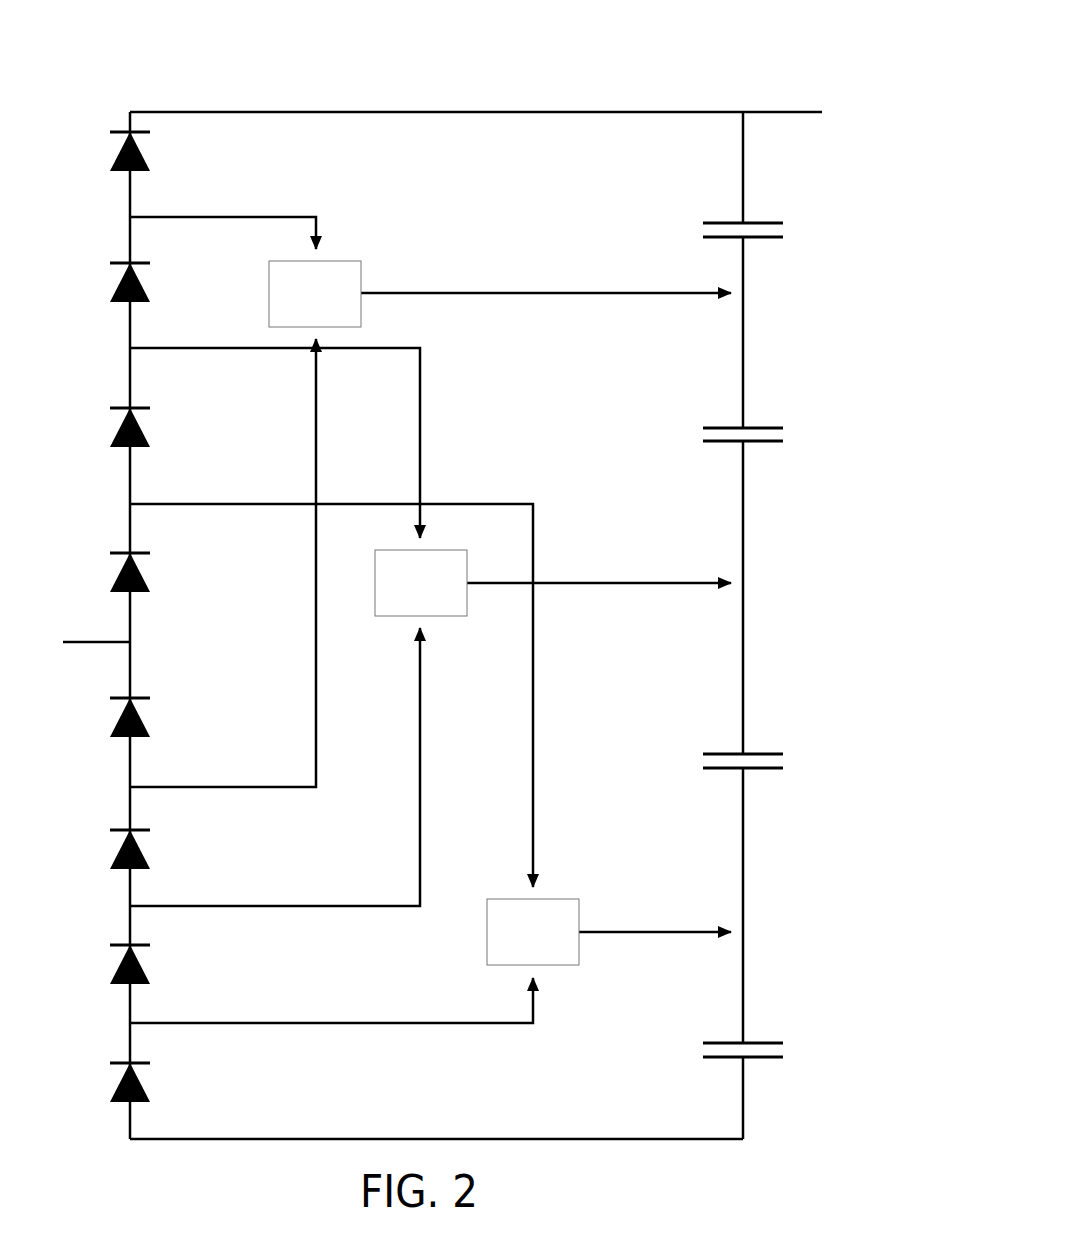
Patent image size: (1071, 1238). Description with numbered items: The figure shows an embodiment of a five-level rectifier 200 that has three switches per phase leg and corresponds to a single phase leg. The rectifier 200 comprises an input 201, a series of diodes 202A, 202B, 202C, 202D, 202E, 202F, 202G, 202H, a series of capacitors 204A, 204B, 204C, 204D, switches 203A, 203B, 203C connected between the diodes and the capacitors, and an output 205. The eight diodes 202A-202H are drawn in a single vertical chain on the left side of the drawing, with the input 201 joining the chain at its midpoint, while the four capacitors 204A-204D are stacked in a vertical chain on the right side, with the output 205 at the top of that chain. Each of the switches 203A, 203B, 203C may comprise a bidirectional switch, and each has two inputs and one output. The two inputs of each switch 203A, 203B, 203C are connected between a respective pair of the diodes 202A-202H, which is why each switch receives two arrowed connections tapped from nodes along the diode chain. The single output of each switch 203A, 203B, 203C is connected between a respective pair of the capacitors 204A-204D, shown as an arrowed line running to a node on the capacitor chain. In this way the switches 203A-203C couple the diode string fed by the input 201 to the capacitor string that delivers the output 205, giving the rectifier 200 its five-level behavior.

The 5-level rectifier 200 is at (381, 600).
The input 201 is at (63, 652).
The diode 202A is at (148, 154).
The diode 202B is at (148, 285).
The diode 202C is at (148, 430).
The diode 202D is at (148, 575).
The diode 202E is at (148, 720).
The diode 202F is at (148, 852).
The diode 202G is at (148, 967).
The diode 202H is at (148, 1085).
The switch 203A is at (315, 294).
The switch 203B is at (421, 583).
The switch 203C is at (533, 932).
The capacitor 204A is at (703, 232).
The capacitor 204B is at (703, 437).
The capacitor 204C is at (703, 763).
The capacitor 204D is at (703, 1052).
The output 205 is at (852, 119).